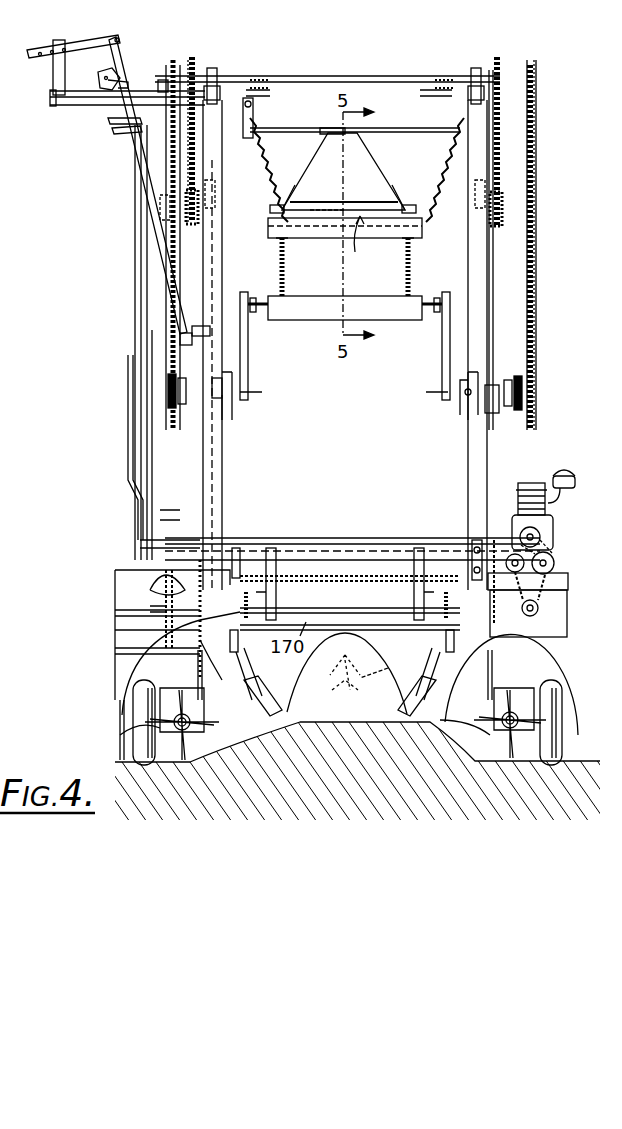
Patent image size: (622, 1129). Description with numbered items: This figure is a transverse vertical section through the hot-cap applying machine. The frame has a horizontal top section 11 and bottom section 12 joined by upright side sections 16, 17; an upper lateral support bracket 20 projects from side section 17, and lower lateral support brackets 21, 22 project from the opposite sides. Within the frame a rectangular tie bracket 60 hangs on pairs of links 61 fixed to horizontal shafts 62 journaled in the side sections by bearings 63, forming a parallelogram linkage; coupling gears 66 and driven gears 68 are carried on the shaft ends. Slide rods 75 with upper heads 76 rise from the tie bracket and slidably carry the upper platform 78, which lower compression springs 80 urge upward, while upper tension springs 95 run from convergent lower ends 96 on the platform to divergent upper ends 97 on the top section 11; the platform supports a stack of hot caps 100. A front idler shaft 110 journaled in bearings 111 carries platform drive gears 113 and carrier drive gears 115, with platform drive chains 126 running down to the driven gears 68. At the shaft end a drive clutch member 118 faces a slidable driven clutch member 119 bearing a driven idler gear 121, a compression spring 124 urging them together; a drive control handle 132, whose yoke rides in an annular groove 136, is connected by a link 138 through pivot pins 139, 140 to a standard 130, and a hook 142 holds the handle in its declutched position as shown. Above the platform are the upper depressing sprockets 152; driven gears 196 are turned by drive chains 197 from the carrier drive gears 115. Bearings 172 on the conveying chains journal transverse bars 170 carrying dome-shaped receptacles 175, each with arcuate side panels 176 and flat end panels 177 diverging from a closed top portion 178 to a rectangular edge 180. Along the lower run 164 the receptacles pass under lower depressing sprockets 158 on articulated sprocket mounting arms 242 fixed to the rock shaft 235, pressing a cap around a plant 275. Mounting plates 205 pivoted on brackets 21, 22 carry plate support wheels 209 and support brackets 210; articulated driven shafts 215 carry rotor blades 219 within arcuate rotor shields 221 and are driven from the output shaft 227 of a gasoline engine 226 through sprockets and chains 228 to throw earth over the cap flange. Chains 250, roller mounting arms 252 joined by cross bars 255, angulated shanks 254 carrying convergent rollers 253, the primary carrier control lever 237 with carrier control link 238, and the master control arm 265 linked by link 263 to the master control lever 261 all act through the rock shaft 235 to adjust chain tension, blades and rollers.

The top section 11 is at (222, 96).
The bottom section 12 is at (200, 610).
The side section 16 is at (487, 275).
The side section 17 is at (203, 258).
The upper lateral support bracket 20 is at (100, 92).
The lower lateral support bracket 21 is at (170, 588).
The lower lateral support bracket 22 is at (568, 580).
The tie bracket 60 is at (326, 312).
The links 61 is at (248, 372).
The horizontal shafts 62 is at (248, 400).
The bearings 63 is at (480, 366).
The coupling gears 66 is at (512, 386).
The driven gears 68 is at (524, 394).
The slide rods 75 is at (406, 288).
The upper heads 76 is at (322, 205).
The upper platform 78 is at (334, 236).
The lower compression springs 80 is at (406, 276).
The upper tension springs 95 is at (262, 184).
The convergent lower ends 96 is at (272, 220).
The divergent upper ends 97 is at (253, 104).
The hot caps 100 is at (375, 241).
The front idler shaft 110 is at (300, 80).
The bearings 111 is at (218, 76).
The platform drive gears 113 is at (192, 57).
The carrier drive gears 115 is at (190, 70).
The drive clutch member 118 is at (108, 74).
The driven clutch member 119 is at (108, 90).
The driven idler gear 121 is at (160, 80).
The compression spring 124 is at (148, 144).
The platform drive chains 126 is at (530, 185).
The standard 130 is at (56, 70).
The drive control handle 132 is at (160, 205).
The annular groove 136 is at (112, 122).
The link 138 is at (50, 96).
The pivot pin 139 is at (118, 37).
The pivot pin 140 is at (32, 58).
The hook 142 is at (180, 340).
The upper depressing sprockets 152 is at (262, 90).
The lower depressing sprockets 158 is at (268, 548).
The lower longitudinal run 164 is at (276, 686).
The rigid bars 170 is at (287, 128).
The bearings 172 is at (258, 110).
The hot cap holding receptacles 175 is at (385, 128).
The arcuate side panels 176 is at (310, 180).
The flat end panels 177 is at (345, 182).
The closed top portion 178 is at (334, 128).
The rectangular edge 180 is at (374, 728).
The driven gears 196 is at (502, 210).
The drive chains 197 is at (195, 164).
The mounting plates 205 is at (170, 740).
The plate support wheels 209 is at (140, 684).
The support brackets 210 is at (228, 742).
The articulated driven shafts 215 is at (170, 714).
The rotor blades 219 is at (160, 728).
The arcuate rotor shields 221 is at (135, 650).
The gasoline engine 226 is at (534, 484).
The output shaft 227 is at (536, 536).
The sprockets and chains 228 is at (352, 576).
The rock shaft 235 is at (314, 560).
The primary carrier control lever 237 is at (142, 542).
The carrier control link 238 is at (128, 466).
The articulated sprocket mounting arms 242 is at (418, 602).
The chains 250 is at (540, 604).
The roller mounting arms 252 is at (246, 592).
The rollers 253 is at (272, 730).
The angulated shanks 254 is at (250, 684).
The cross bars 255 is at (236, 548).
The master control lever 261 is at (135, 260).
The link 263 is at (147, 440).
The master control arm 265 is at (160, 522).
The plants 275 is at (378, 672).